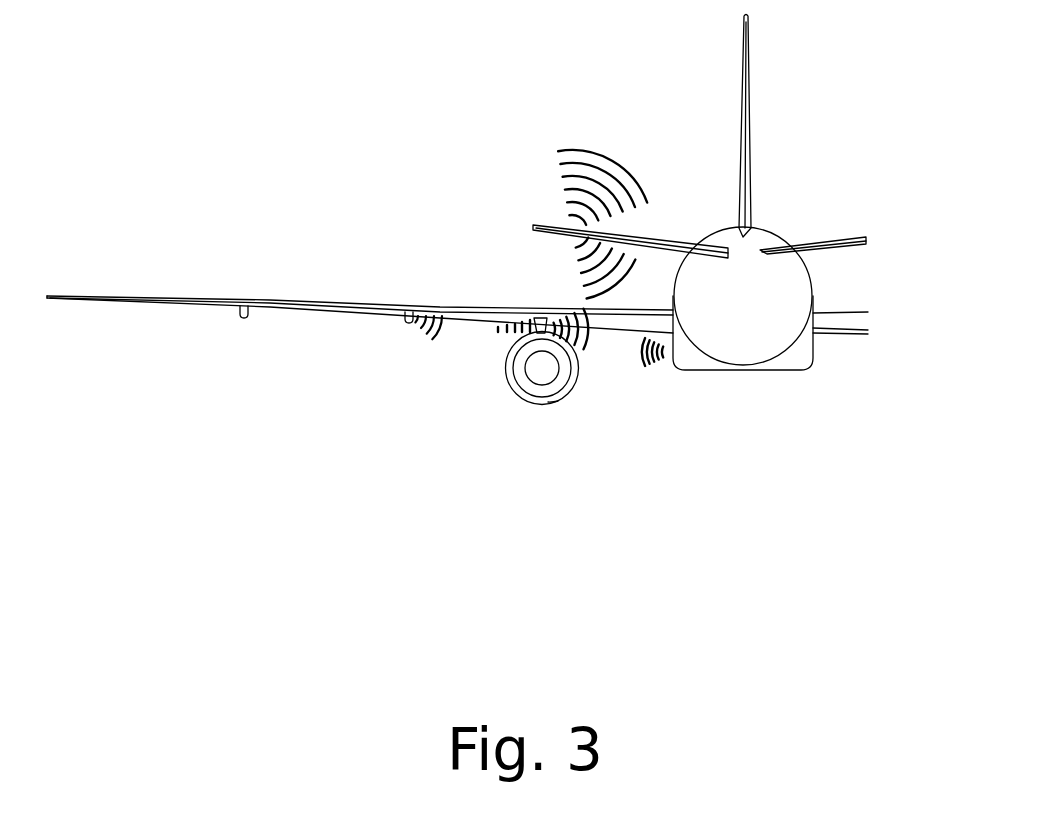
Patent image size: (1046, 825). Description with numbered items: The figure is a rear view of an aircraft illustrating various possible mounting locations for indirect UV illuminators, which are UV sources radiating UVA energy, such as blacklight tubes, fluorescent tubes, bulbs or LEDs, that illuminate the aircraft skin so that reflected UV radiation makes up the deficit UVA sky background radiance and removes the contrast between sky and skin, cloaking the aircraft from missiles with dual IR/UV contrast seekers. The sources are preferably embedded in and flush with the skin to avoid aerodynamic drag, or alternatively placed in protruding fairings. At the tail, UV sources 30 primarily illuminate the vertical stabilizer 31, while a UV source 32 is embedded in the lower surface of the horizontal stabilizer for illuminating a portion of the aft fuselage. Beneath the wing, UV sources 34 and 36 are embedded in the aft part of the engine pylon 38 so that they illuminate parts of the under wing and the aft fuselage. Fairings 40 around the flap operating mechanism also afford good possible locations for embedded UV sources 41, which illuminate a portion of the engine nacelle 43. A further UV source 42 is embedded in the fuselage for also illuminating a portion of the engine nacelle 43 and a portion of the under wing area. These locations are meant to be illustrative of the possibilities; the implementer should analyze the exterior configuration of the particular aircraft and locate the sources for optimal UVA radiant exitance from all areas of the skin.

The UV source 30 is at (577, 228).
The vertical stabilizer 31 is at (747, 115).
The UV source 32 is at (575, 232).
The UV source 34 is at (556, 357).
The UV source 36 is at (537, 338).
The engine pylon 38 is at (540, 333).
The fairing 40 is at (244, 317).
The UV source 41 is at (420, 326).
The UV source 42 is at (675, 352).
The engine nacelle 43 is at (553, 404).